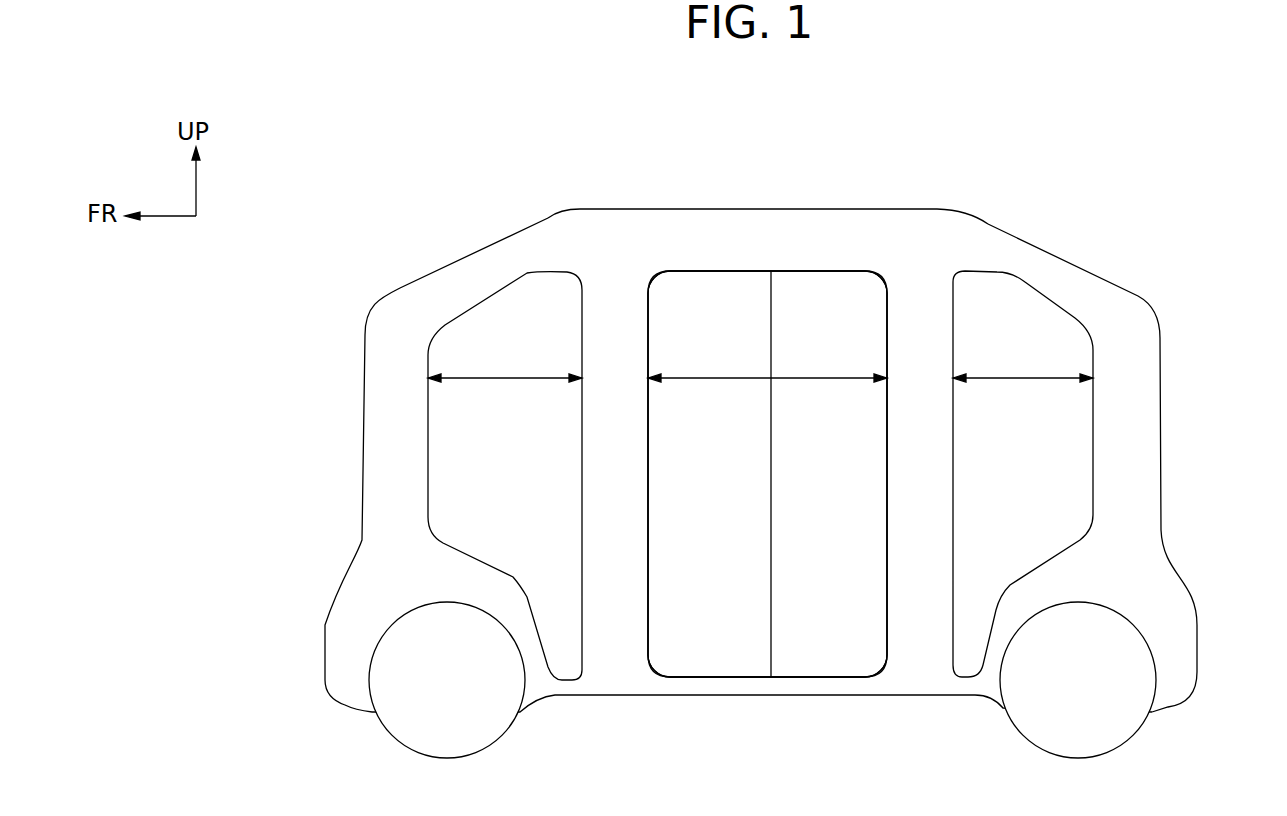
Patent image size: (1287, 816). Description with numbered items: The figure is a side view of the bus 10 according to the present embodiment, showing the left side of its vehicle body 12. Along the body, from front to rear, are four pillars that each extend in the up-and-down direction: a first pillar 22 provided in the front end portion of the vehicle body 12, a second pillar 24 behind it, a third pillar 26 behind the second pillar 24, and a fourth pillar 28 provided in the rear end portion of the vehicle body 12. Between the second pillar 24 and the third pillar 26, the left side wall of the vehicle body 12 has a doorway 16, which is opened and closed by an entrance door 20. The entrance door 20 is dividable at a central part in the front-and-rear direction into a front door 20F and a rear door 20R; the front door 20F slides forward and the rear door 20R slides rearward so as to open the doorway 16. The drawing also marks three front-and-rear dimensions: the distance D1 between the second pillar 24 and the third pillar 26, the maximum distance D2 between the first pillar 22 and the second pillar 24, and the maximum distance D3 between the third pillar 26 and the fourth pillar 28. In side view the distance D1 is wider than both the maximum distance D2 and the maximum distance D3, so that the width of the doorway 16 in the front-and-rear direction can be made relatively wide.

The bus 10 is at (759, 466).
The vehicle body 12 is at (790, 207).
The doorway 16 is at (648, 573).
The entrance door 20 is at (796, 618).
The front door 20F is at (715, 637).
The rear door 20R is at (850, 637).
The first pillar 22 is at (380, 471).
The second pillar 24 is at (600, 471).
The third pillar 26 is at (928, 470).
The fourth pillar 28 is at (1138, 470).
The distance D1 is at (797, 377).
The maximum distance D2 is at (503, 377).
The maximum distance D3 is at (1028, 377).